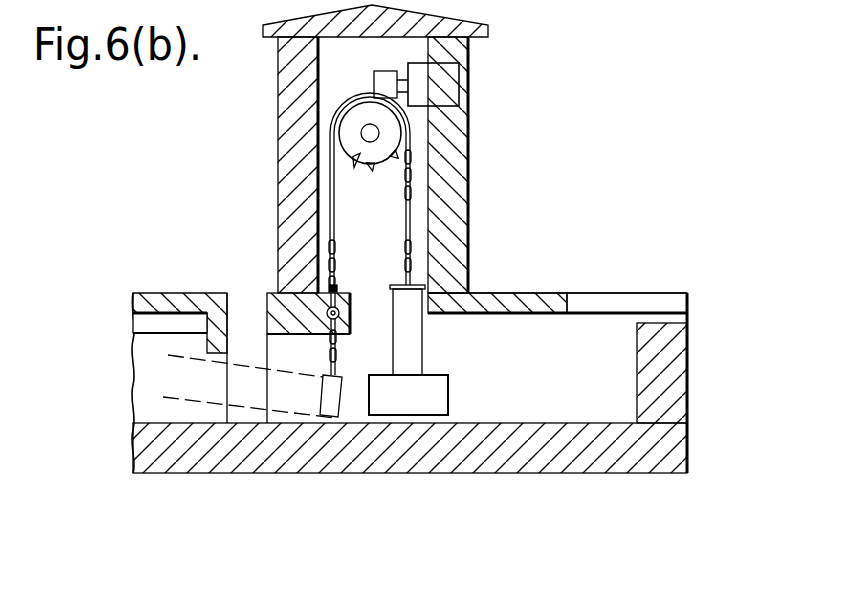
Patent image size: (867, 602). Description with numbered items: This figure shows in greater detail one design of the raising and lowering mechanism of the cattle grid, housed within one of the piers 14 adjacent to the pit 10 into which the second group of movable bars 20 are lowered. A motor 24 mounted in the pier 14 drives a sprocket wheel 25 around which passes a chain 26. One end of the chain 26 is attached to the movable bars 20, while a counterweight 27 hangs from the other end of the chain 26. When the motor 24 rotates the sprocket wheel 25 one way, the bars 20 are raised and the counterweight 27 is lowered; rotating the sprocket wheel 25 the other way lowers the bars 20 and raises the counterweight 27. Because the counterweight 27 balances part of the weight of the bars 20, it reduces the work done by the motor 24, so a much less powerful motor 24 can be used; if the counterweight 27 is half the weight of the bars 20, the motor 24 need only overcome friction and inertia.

The pit 10 is at (663, 412).
The pier 14 is at (292, 84).
The second group of parallel bars 20 is at (187, 293).
The motor 24 is at (445, 85).
The sprocket wheel 25 is at (400, 132).
The chain 26 is at (410, 180).
The counterweight 27 is at (449, 388).